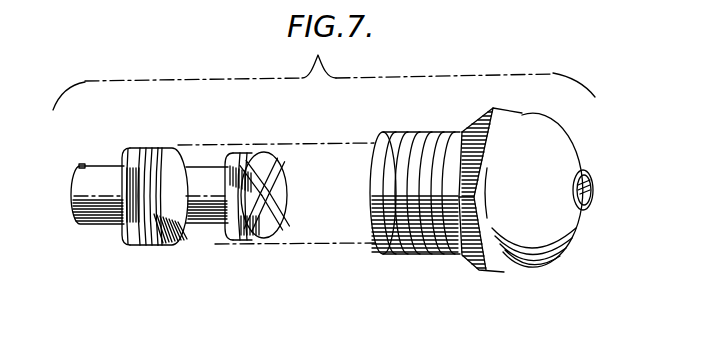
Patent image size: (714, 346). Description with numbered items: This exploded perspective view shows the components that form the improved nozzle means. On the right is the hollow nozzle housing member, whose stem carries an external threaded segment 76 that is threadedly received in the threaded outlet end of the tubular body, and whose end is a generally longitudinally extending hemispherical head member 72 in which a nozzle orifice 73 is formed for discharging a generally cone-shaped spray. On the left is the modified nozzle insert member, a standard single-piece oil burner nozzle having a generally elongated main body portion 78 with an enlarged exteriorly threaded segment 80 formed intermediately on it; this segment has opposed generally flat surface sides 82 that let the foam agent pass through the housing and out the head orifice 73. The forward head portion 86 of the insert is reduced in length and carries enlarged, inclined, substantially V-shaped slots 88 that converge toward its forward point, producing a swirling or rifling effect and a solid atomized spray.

The hemispherical head member 72 is at (543, 150).
The nozzle orifice 73 is at (593, 187).
The external threaded segment 76 is at (436, 132).
The main body portion 78 is at (102, 207).
The enlarged exteriorly threaded segment 80 is at (172, 148).
The flat surface sides 82 is at (132, 183).
The head portion 86 is at (246, 153).
The slots 88 is at (280, 162).